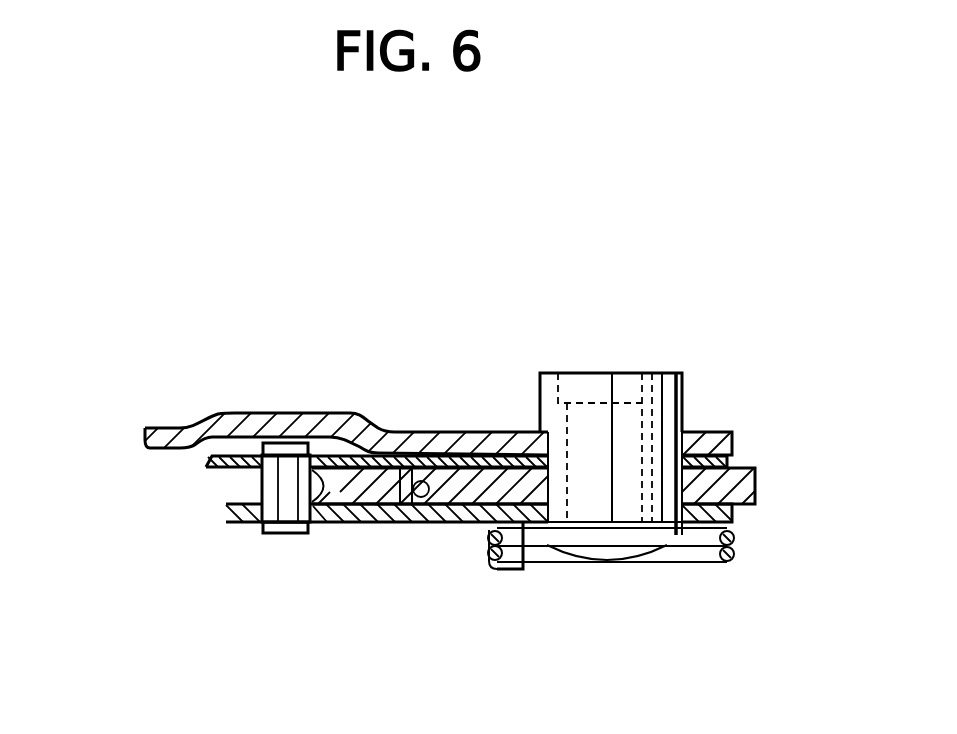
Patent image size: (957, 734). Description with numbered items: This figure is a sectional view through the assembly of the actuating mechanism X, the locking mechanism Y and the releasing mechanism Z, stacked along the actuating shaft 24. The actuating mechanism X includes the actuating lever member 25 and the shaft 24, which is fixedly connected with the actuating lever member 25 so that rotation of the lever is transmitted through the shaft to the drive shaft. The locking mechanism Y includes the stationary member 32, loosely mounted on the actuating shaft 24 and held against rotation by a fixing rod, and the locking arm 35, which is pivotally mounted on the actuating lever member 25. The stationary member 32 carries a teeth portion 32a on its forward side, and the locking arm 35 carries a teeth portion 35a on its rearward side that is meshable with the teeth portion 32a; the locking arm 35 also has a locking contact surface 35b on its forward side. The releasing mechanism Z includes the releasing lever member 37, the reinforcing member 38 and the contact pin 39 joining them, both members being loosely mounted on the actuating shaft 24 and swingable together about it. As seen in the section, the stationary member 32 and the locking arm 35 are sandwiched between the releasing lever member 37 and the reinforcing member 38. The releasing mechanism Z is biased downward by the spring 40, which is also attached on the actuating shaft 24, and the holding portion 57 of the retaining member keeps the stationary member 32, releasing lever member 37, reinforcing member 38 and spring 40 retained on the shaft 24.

The actuating shaft 24 is at (672, 373).
The actuating lever member 25 is at (257, 412).
The stationary member 32 is at (752, 470).
The teeth portion 32a is at (422, 523).
The locking arm 35 is at (413, 433).
The teeth portion 35a is at (357, 478).
The locking contact surface 35b is at (330, 447).
The releasing lever member 37 is at (208, 465).
The reinforcing member 38 is at (450, 526).
The contact pin 39 is at (262, 522).
The spring 40 is at (737, 537).
The holding portion 57 is at (518, 570).
The actuating mechanism X is at (144, 426).
The locking mechanism Y is at (757, 478).
The releasing mechanism Z is at (258, 482).